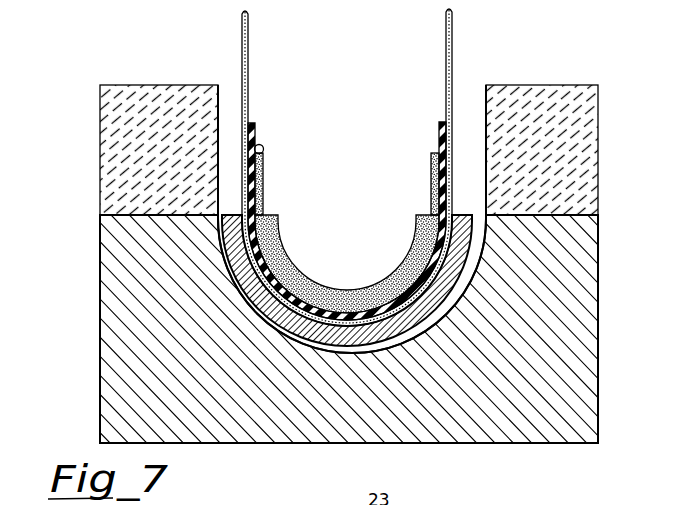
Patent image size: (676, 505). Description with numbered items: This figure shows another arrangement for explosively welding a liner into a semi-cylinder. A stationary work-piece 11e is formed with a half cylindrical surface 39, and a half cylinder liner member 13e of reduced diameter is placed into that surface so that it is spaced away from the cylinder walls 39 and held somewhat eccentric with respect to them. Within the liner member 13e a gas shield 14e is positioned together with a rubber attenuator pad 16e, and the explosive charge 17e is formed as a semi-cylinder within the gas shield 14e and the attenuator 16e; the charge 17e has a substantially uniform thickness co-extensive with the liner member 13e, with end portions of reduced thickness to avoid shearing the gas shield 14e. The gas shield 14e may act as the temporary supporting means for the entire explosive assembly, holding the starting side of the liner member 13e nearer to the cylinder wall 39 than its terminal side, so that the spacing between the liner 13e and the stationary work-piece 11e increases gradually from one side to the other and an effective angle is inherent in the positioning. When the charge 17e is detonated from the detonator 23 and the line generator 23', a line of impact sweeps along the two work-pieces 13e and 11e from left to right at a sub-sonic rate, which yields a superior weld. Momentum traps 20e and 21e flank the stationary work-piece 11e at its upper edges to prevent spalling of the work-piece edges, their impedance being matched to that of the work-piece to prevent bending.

The stationary work-piece 11e is at (598, 288).
The half cylinder liner member 13e is at (240, 268).
The gas shield 14e is at (249, 52).
The rubber attenuator pad 16e is at (253, 124).
The explosive charge 17e is at (325, 292).
The momentum trap 20e is at (100, 160).
The momentum trap 21e is at (598, 158).
The detonator 23 is at (275, 138).
The line generator 23' is at (347, 184).
The half cylindrical surface 39 is at (474, 263).